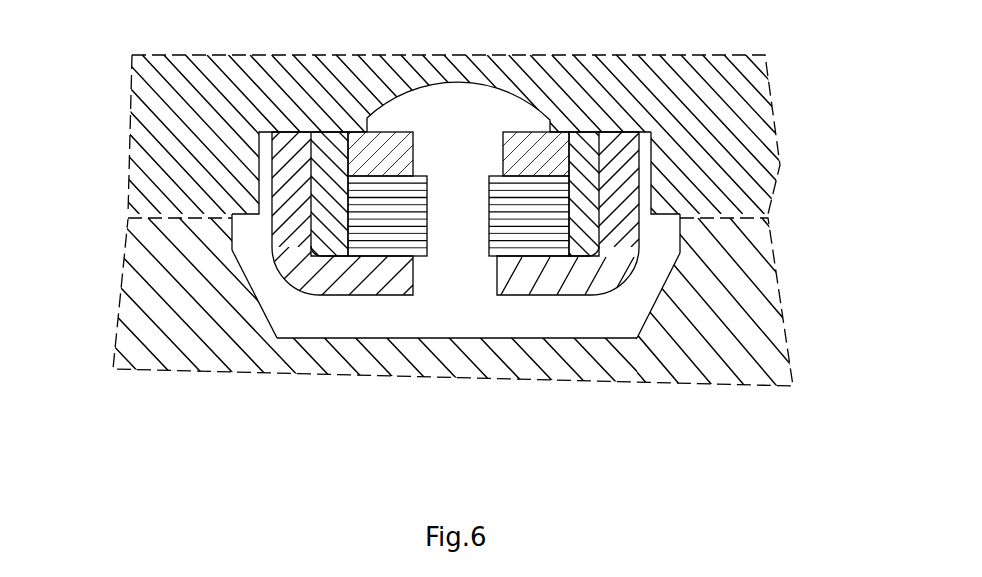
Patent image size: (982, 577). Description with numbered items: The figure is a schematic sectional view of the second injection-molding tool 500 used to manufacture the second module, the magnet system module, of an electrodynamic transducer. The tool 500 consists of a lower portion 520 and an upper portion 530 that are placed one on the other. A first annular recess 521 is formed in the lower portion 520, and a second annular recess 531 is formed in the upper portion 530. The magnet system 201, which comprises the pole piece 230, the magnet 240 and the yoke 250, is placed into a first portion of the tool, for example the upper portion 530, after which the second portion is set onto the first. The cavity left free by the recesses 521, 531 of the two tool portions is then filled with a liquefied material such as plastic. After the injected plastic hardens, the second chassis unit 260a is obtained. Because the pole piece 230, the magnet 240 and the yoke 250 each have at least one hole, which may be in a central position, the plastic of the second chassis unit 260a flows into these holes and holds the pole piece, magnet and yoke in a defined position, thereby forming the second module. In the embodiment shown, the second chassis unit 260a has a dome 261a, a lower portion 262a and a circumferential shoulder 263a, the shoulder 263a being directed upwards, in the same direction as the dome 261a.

The magnet system 201 is at (358, 223).
The dome 261a is at (521, 97).
The pole piece 230 is at (543, 157).
The upper portion 530 is at (745, 113).
The second annular recess 531 is at (653, 187).
The circumferential shoulder 263a is at (253, 213).
The second injection-molding tool 500 is at (790, 278).
The lower portion 262a is at (275, 302).
The second chassis unit 260a is at (470, 322).
The magnet 240 is at (537, 253).
The yoke 250 is at (577, 282).
The first annular recess 521 is at (665, 283).
The lower portion 520 is at (760, 352).